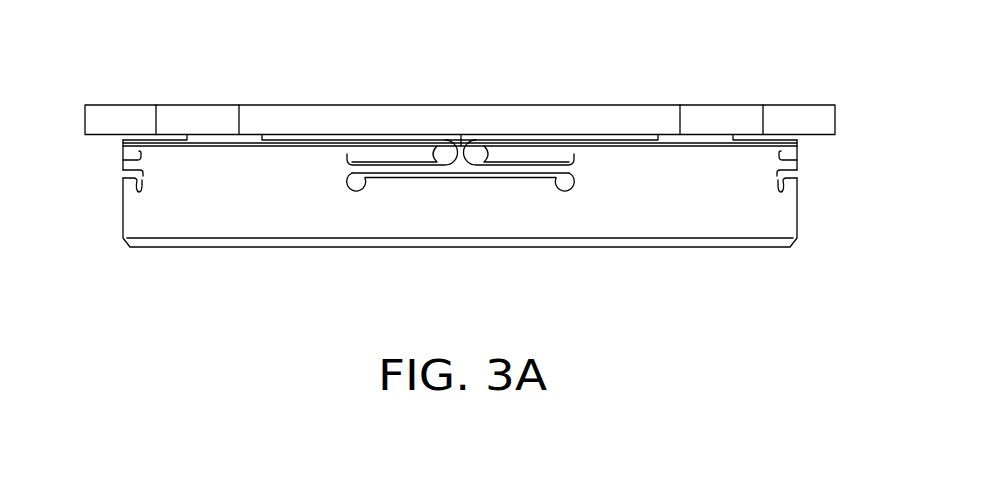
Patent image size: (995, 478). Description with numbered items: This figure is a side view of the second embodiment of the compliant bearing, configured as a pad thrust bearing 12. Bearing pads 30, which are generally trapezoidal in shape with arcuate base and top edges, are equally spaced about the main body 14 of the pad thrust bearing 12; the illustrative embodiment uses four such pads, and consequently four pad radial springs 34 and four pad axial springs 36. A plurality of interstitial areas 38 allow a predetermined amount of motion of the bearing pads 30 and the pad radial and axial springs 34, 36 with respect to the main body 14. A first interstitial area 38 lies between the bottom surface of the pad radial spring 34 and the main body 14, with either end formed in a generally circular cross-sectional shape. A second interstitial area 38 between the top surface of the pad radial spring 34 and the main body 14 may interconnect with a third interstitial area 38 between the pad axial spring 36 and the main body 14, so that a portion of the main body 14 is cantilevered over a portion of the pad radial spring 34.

The pad thrust bearing 12 is at (632, 278).
The main body 14 is at (300, 193).
The bearing pads 30 is at (115, 120).
The pad radial springs 34 is at (377, 168).
The pad axial springs 36 is at (460, 145).
The interstitial areas 38 is at (473, 157).